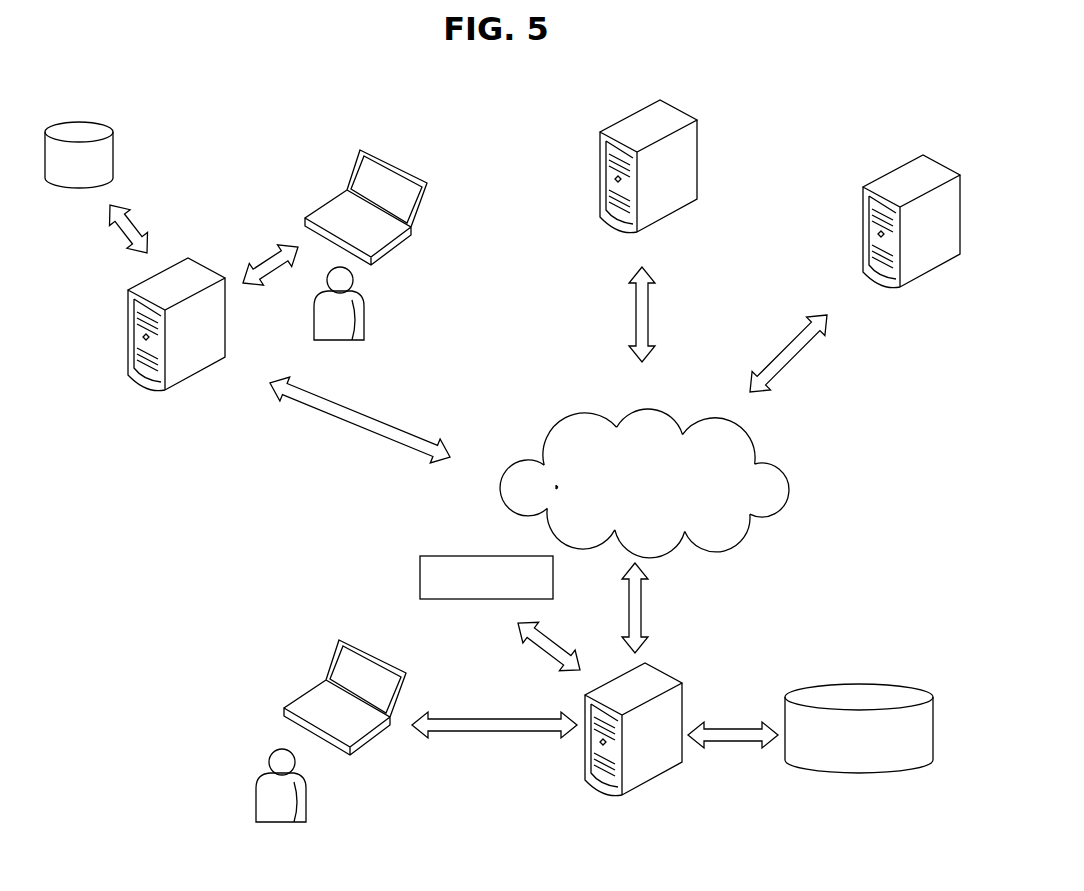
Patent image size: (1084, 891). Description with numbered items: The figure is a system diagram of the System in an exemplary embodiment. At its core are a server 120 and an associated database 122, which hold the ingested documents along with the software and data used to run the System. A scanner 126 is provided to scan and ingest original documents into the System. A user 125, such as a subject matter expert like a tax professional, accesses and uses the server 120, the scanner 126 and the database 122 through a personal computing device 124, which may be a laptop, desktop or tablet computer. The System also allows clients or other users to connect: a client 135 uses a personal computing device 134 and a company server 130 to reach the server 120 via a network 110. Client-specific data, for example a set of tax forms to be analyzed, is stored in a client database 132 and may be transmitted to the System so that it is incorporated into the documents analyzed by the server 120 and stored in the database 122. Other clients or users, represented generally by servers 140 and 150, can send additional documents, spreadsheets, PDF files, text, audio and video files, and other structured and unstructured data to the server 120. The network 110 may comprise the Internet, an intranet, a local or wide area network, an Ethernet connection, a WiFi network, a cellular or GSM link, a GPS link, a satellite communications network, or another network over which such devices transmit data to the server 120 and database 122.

The network 110 is at (644, 483).
The server 120 is at (667, 672).
The database 122 is at (862, 697).
The personal computing device 124 is at (335, 655).
The user 125 is at (268, 798).
The scanner 126 is at (477, 555).
The company server 130 is at (135, 338).
The client database 132 is at (117, 133).
The personal computing device 134 is at (380, 173).
The client 135 is at (342, 318).
The server 140 is at (655, 118).
The server 150 is at (920, 170).